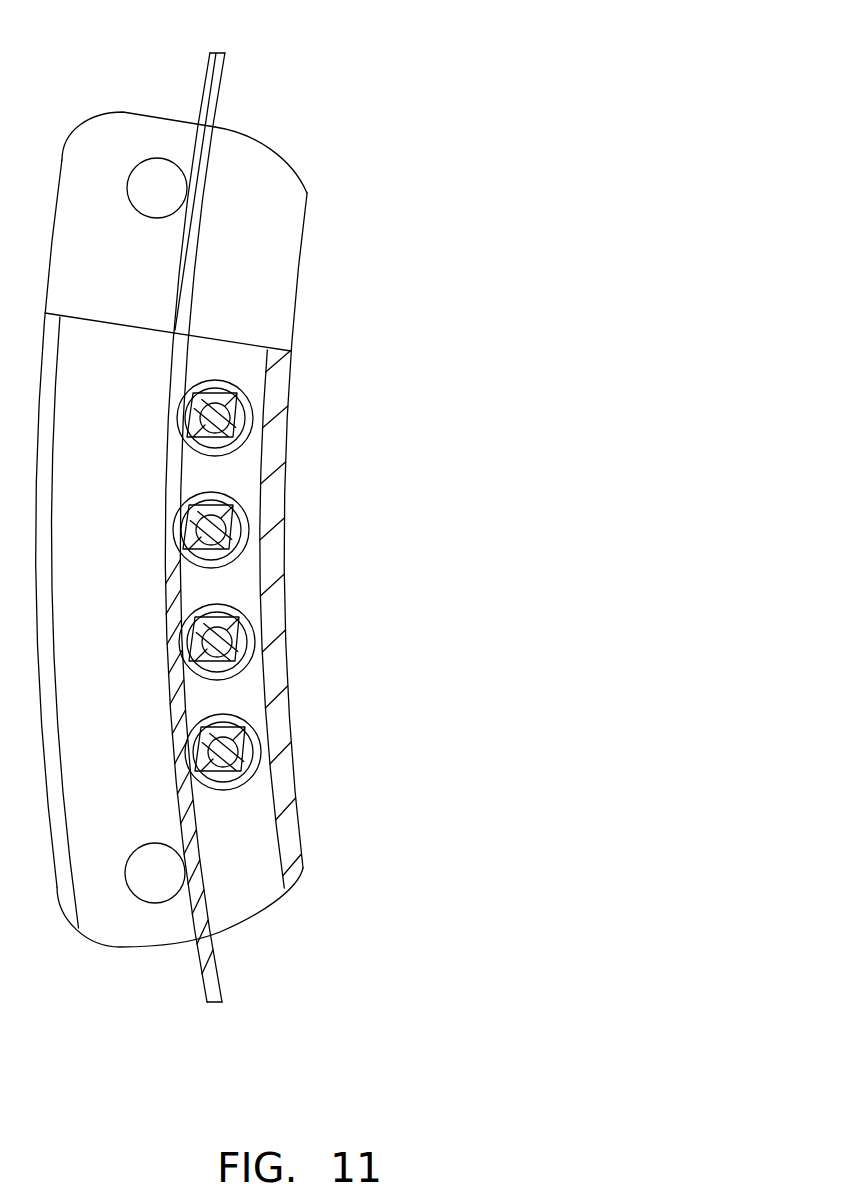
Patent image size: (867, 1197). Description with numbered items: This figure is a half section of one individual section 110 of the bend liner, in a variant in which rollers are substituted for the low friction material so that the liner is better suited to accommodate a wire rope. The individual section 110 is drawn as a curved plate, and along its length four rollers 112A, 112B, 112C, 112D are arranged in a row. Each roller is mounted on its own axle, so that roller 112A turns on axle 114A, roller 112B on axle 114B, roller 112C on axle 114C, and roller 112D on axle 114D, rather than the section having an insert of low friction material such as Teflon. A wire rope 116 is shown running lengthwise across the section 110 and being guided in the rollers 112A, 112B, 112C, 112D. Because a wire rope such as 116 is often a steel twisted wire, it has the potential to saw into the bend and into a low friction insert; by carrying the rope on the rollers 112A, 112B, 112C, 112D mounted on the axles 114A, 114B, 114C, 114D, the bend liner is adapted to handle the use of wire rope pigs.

The individual section 110 is at (218, 278).
The wire rope 116 is at (218, 97).
The roller 112A is at (200, 447).
The axle 114A is at (223, 412).
The roller 112B is at (196, 559).
The axle 114B is at (219, 524).
The roller 112C is at (202, 671).
The axle 114C is at (225, 636).
The roller 112D is at (208, 781).
The axle 114D is at (231, 746).